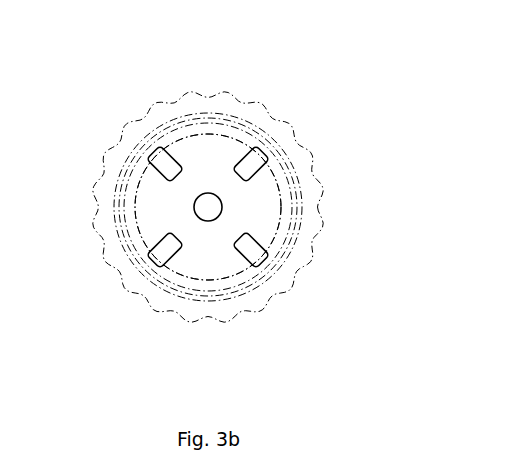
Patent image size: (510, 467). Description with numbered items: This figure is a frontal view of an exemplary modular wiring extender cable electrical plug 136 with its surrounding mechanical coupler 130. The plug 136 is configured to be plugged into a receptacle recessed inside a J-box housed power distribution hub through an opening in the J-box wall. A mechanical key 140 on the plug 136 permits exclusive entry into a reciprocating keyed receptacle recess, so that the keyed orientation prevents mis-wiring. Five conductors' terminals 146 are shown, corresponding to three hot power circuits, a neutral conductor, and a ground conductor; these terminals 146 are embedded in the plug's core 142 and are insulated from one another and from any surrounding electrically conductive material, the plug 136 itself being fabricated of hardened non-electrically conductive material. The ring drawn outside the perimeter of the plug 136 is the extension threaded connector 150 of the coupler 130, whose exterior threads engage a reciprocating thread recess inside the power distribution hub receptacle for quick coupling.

The electrical plug 136 is at (100, 57).
The mechanical coupler 130 is at (322, 230).
The mechanical key 140 is at (210, 133).
The plug's core 142 is at (268, 203).
The conductors' terminals 146 is at (208, 222).
The extension threaded connector 150 is at (268, 277).